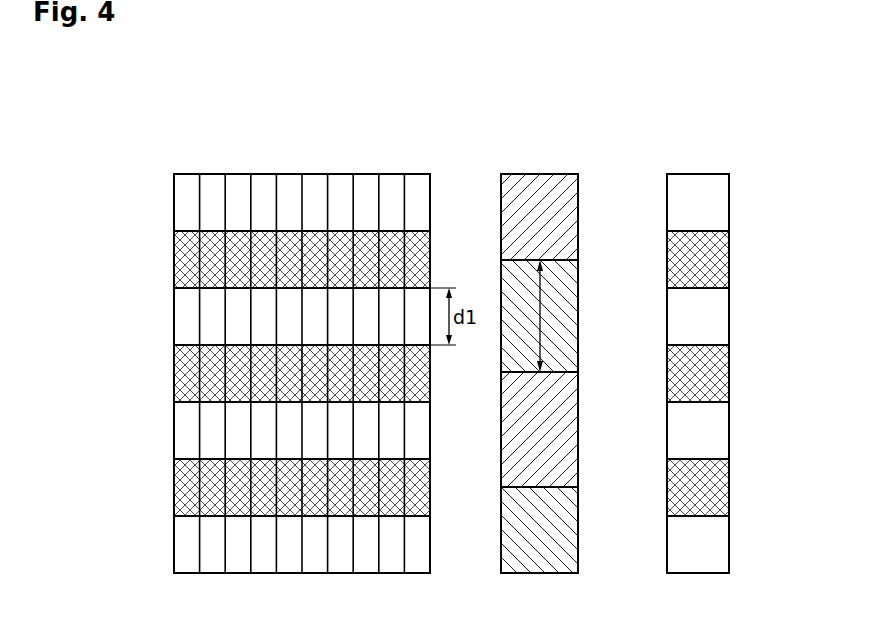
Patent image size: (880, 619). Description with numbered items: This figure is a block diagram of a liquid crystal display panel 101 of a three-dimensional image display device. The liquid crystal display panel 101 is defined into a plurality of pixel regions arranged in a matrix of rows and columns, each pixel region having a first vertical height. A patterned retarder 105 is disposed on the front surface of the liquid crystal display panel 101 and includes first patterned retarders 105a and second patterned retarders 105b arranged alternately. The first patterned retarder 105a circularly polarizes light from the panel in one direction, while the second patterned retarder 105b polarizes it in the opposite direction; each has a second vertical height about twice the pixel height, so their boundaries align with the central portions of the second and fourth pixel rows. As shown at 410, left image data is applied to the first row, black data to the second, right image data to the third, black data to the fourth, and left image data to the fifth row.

The liquid crystal display panel 101 is at (305, 147).
The patterned retarder 105 is at (541, 147).
The first patterned retarder 105a is at (580, 212).
The second patterned retarder 105b is at (580, 313).
The data application sequence 410 is at (716, 323).